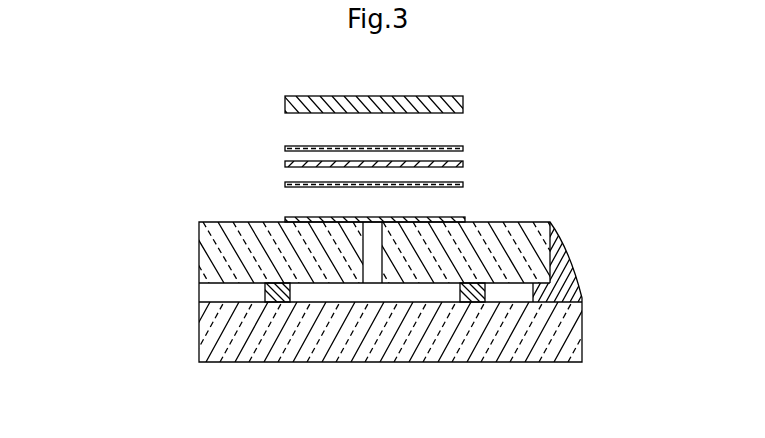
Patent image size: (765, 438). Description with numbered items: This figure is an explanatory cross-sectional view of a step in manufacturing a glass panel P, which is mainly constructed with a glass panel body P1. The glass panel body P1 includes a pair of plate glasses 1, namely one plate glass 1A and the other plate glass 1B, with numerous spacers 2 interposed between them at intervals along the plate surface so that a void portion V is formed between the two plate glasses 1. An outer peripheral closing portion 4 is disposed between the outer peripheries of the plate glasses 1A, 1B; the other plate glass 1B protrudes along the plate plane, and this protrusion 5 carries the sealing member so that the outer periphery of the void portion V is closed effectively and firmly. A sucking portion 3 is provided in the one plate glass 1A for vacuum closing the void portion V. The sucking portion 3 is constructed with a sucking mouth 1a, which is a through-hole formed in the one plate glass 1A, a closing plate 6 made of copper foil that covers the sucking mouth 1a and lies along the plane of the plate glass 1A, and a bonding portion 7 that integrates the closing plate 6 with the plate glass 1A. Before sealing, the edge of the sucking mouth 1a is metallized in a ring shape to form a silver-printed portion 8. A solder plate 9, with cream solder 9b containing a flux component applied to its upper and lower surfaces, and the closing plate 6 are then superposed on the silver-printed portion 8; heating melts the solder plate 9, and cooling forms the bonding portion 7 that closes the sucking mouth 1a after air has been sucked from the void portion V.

The plate glass 1 is at (324, 313).
The one plate glass 1A is at (199, 247).
The other plate glass 1B is at (199, 326).
The sucking mouth 1a is at (372, 268).
The spacer 2 is at (264, 290).
The sucking portion 3 is at (278, 133).
The outer peripheral closing portion 4 is at (568, 265).
The protrusion 5 is at (582, 317).
The closing plate 6 is at (465, 105).
The bonding portion 7 is at (441, 145).
The silver-printed portion 8 is at (467, 218).
The solder plate 9 is at (463, 163).
The cream solder 9b is at (463, 145).
The glass panel P is at (218, 122).
The glass panel body P1 is at (237, 222).
The void portion V is at (352, 293).